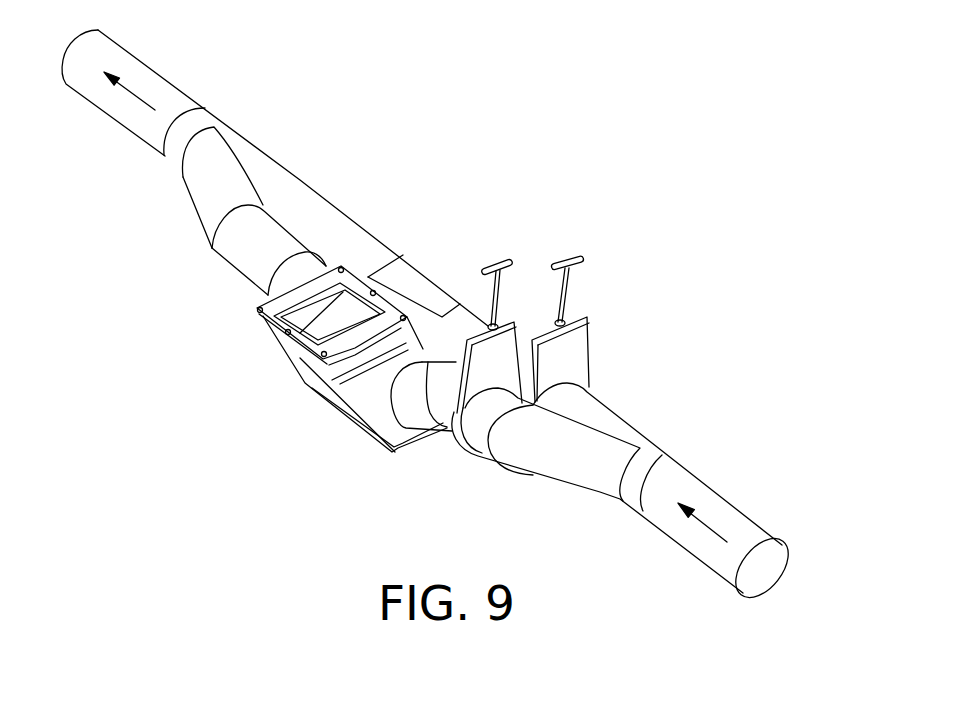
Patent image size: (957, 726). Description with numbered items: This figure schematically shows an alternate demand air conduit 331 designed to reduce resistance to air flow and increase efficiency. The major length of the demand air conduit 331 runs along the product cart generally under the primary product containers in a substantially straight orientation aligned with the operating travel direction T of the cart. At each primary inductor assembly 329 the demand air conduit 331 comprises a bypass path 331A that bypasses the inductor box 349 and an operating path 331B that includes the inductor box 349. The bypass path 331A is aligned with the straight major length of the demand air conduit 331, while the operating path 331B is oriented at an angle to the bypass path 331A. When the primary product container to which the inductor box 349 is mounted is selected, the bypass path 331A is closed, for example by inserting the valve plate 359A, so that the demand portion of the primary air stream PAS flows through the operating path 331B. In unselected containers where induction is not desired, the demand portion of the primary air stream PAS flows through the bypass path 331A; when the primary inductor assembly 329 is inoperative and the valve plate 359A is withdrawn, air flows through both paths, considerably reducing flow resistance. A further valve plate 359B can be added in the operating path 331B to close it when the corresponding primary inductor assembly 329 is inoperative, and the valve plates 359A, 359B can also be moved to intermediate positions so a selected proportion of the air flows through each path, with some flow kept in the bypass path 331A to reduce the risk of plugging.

The primary inductor assembly 329 is at (250, 346).
The demand air conduit 331 is at (662, 452).
The bypass path 331A is at (490, 323).
The operating path 331B is at (450, 428).
The inductor box 349 is at (330, 417).
The valve plate 359A is at (590, 328).
The further valve plate 359B is at (519, 335).
The operating travel direction T is at (119, 80).
The primary air stream PAS is at (712, 527).